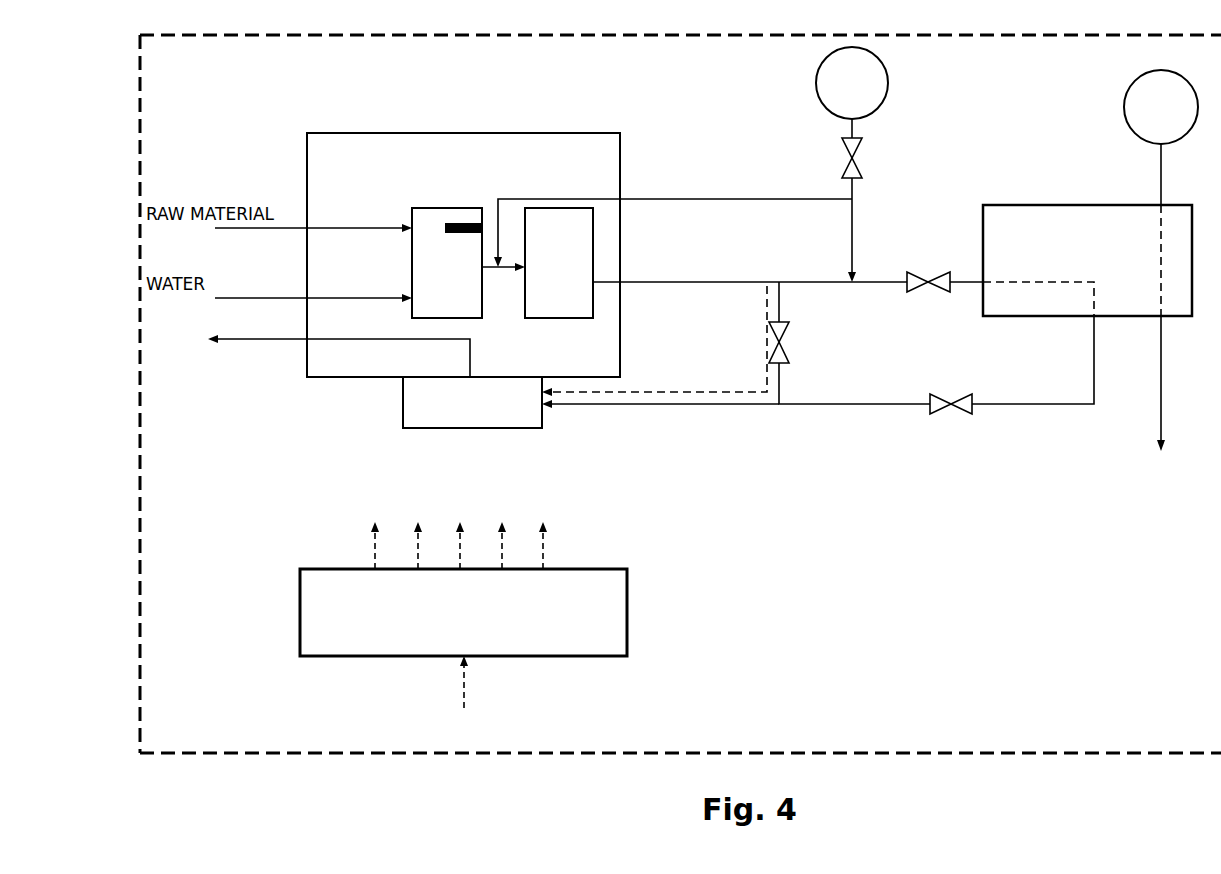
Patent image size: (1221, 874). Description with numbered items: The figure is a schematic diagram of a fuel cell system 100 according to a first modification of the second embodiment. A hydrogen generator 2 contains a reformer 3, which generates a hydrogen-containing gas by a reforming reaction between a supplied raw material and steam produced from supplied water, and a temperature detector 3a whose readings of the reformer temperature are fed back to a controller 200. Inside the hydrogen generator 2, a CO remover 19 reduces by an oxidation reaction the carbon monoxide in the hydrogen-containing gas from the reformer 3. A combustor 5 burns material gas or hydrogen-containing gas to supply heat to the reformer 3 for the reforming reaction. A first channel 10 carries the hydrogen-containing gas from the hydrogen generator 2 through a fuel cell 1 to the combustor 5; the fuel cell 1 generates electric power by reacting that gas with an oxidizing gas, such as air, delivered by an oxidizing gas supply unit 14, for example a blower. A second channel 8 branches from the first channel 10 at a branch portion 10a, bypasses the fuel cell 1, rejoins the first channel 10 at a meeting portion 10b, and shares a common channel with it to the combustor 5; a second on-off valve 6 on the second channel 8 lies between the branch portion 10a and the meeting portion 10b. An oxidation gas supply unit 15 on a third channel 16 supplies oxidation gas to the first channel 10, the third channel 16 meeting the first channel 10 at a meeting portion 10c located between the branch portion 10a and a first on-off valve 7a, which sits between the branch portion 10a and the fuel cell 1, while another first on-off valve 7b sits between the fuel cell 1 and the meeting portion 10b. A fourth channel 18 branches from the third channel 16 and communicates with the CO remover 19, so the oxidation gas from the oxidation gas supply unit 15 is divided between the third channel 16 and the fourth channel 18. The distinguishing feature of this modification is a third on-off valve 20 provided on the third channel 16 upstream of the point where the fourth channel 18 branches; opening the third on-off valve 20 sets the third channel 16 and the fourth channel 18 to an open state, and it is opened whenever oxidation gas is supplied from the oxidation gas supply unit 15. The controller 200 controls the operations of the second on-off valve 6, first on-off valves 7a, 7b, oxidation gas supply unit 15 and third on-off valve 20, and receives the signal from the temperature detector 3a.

The fuel cell system 100 is at (238, 23).
The fuel cell 1 is at (1087, 260).
The hydrogen generator 2 is at (569, 133).
The reformer 3 is at (447, 263).
The temperature detector 3a is at (458, 222).
The combustor 5 is at (375, 381).
The second on-off valve 6 is at (768, 342).
The first on-off valve 7a is at (912, 272).
The first on-off valve 7b is at (952, 414).
The second channel 8 is at (718, 390).
The first channel 10 is at (707, 282).
The branch portion 10a is at (779, 282).
The meeting portion 10b is at (780, 405).
The meeting portion 10c is at (852, 284).
The oxidizing gas supply unit 14 is at (1161, 260).
The oxidation gas supply unit 15 is at (852, 83).
The third channel 16 is at (852, 227).
The fourth channel 18 is at (700, 198).
The CO remover 19 is at (559, 263).
The third on-off valve 20 is at (862, 150).
The controller 200 is at (463, 616).